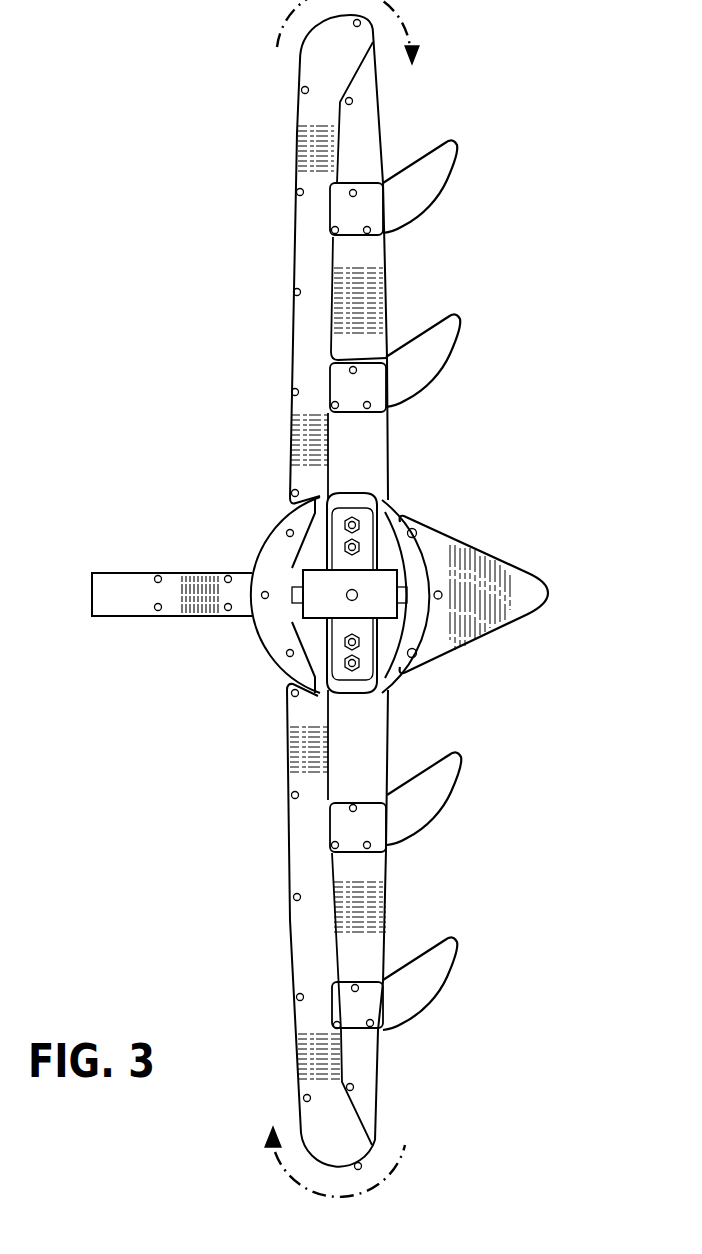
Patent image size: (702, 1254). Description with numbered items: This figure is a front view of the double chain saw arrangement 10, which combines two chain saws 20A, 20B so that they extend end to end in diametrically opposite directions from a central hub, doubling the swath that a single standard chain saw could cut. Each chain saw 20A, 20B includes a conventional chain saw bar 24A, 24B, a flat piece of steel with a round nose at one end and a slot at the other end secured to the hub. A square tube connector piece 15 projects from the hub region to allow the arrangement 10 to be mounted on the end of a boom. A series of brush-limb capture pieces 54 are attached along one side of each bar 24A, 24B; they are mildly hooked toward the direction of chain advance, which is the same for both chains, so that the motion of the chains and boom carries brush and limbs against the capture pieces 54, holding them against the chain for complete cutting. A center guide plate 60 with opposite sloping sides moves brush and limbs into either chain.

The double chain saw arrangement 10 is at (137, 124).
The square tube connector piece 15 is at (127, 573).
The chain saw 20A is at (281, 279).
The chain saw 20B is at (273, 922).
The chain saw bar 24A is at (380, 255).
The chain saw bar 24B is at (367, 1052).
The brush-limb capture piece 54 is at (433, 177).
The center guide plate 60 is at (527, 586).